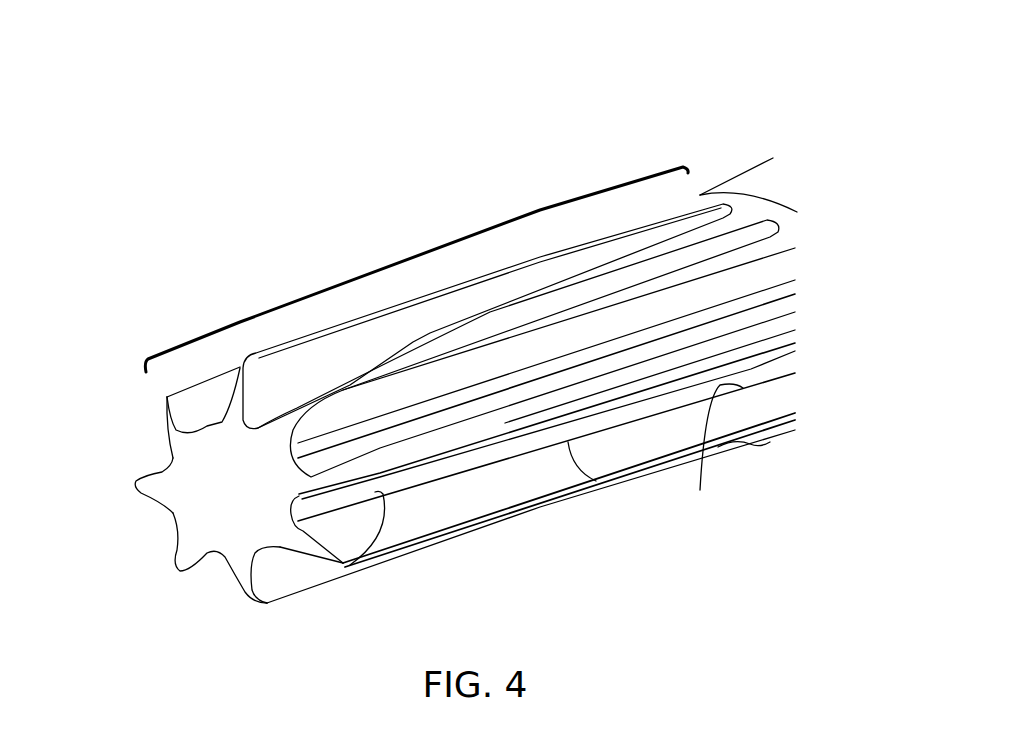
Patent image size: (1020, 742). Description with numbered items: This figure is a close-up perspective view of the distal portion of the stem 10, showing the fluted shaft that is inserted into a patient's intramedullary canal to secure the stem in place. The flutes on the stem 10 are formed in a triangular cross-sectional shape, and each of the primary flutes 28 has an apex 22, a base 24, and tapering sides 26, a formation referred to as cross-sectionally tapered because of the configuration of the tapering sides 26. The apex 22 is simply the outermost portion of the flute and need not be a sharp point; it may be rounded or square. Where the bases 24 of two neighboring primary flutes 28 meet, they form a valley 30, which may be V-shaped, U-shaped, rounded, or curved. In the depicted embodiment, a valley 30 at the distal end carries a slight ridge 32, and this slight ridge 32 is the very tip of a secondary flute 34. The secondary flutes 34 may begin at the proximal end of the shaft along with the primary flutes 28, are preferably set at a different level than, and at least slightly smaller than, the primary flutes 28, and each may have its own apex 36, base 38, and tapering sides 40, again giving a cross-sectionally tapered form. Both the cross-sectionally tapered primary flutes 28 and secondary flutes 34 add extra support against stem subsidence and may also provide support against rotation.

The stem 10 is at (788, 129).
The apex 22 is at (167, 396).
The base 24 is at (170, 442).
The tapering sides 26 is at (167, 417).
The primary flutes 28 is at (395, 259).
The valley 30 is at (192, 568).
The slight ridge 32 is at (343, 563).
The secondary flutes 34 is at (600, 485).
The apex 36 is at (767, 390).
The base 38 is at (751, 369).
The tapering sides 40 is at (713, 452).